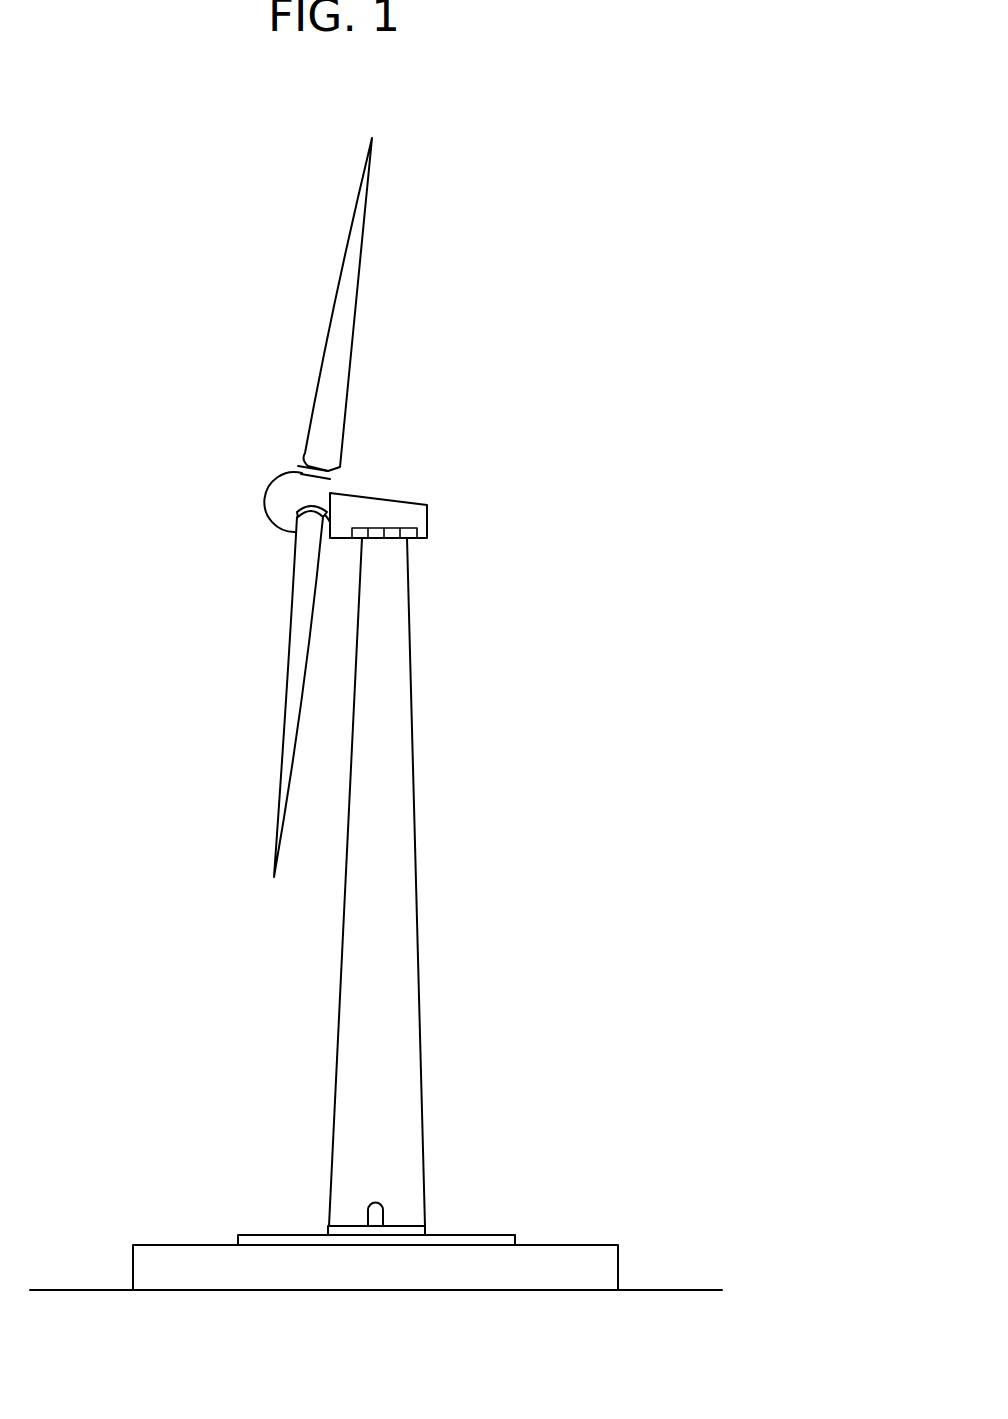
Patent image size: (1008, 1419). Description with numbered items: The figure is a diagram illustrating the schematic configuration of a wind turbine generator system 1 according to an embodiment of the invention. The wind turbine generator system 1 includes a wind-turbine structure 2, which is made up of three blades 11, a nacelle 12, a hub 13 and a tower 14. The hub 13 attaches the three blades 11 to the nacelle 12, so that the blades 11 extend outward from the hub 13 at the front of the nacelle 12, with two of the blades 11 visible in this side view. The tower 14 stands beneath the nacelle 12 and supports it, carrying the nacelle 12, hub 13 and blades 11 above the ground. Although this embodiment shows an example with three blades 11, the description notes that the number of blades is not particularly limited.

The wind turbine generator system 1 is at (592, 188).
The wind-turbine structure 2 is at (560, 625).
The blade 11 is at (347, 303).
The nacelle 12 is at (385, 465).
The hub 13 is at (288, 498).
The tower 14 is at (416, 885).